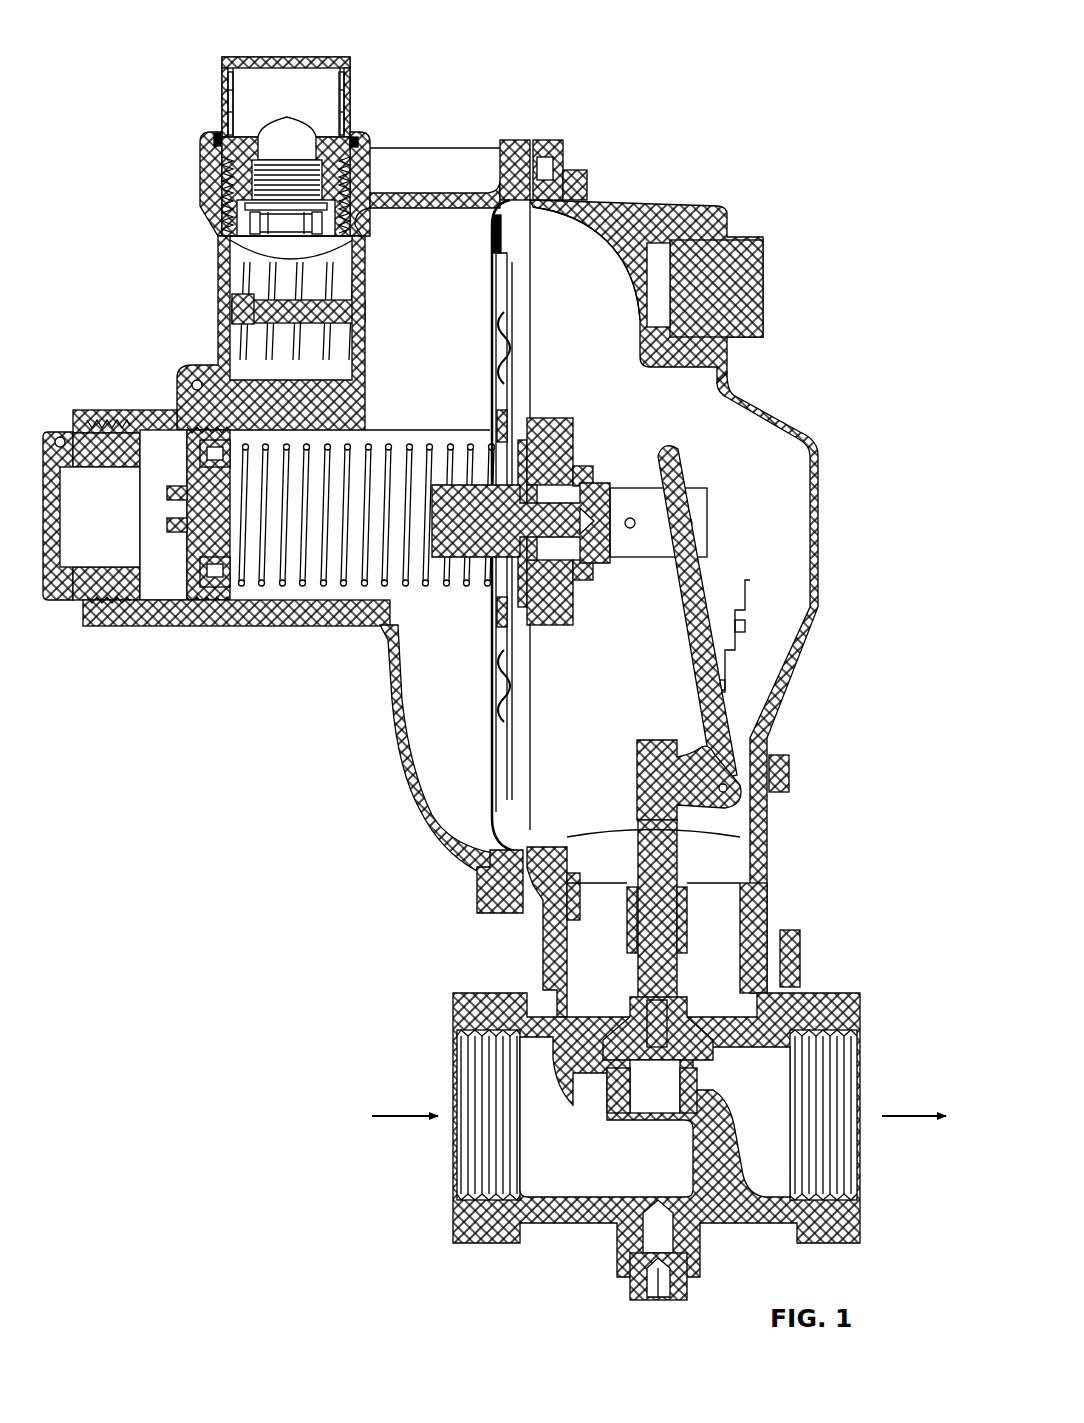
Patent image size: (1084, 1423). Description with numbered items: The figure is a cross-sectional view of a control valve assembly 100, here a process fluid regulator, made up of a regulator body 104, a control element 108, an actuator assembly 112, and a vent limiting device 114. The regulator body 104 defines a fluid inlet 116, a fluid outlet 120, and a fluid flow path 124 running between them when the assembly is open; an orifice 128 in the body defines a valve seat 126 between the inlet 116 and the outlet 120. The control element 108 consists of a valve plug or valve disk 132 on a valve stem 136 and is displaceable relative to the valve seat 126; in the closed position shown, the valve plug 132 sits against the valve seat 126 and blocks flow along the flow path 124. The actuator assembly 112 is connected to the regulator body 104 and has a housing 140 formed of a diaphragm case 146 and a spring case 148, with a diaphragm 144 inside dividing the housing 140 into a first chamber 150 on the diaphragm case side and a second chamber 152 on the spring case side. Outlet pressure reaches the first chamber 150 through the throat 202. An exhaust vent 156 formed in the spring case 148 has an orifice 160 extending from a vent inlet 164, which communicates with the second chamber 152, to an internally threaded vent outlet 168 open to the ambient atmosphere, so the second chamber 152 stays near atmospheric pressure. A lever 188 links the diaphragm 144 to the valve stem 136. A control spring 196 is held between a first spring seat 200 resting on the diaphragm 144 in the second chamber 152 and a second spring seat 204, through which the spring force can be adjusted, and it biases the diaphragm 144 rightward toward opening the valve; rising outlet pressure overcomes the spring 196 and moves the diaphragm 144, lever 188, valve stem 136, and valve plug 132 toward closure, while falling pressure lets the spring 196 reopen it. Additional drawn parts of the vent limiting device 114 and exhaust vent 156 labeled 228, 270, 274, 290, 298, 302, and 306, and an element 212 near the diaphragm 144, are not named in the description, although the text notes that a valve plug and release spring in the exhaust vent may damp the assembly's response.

The control valve assembly 100 is at (510, 664).
The regulator body 104 is at (663, 1127).
The control element 108 is at (687, 857).
The actuator assembly 112 is at (534, 130).
The vent limiting device 114 is at (243, 142).
The fluid inlet 116 is at (453, 1067).
The fluid outlet 120 is at (860, 1050).
The fluid flow path 124 is at (695, 1179).
The valve seat 126 is at (607, 1073).
The orifice 128 is at (643, 1095).
The valve plug 132 is at (717, 1053).
The valve stem 136 is at (667, 937).
The actuator housing 140 is at (818, 548).
The diaphragm 144 is at (488, 218).
The diaphragm case 146 is at (680, 217).
The spring case 148 is at (413, 777).
The first chamber 150 is at (630, 416).
The second chamber 152 is at (459, 676).
The exhaust vent 156 is at (212, 308).
The orifice 160 is at (262, 247).
The vent inlet 164 is at (347, 232).
The vent outlet 168 is at (215, 134).
The lever 188 is at (710, 727).
The control spring 196 is at (217, 587).
The first spring seat 200 is at (497, 422).
The throat 202 is at (745, 967).
The second spring seat 204 is at (187, 570).
The bellows spring 212 is at (513, 680).
The cap 228 is at (285, 81).
The cap top wall 270 is at (220, 60).
The nut 274 is at (228, 190).
The seal washer 290 is at (230, 240).
The plug 298 is at (286, 223).
The cap side wall 302 is at (220, 100).
The cap side wall 306 is at (350, 87).